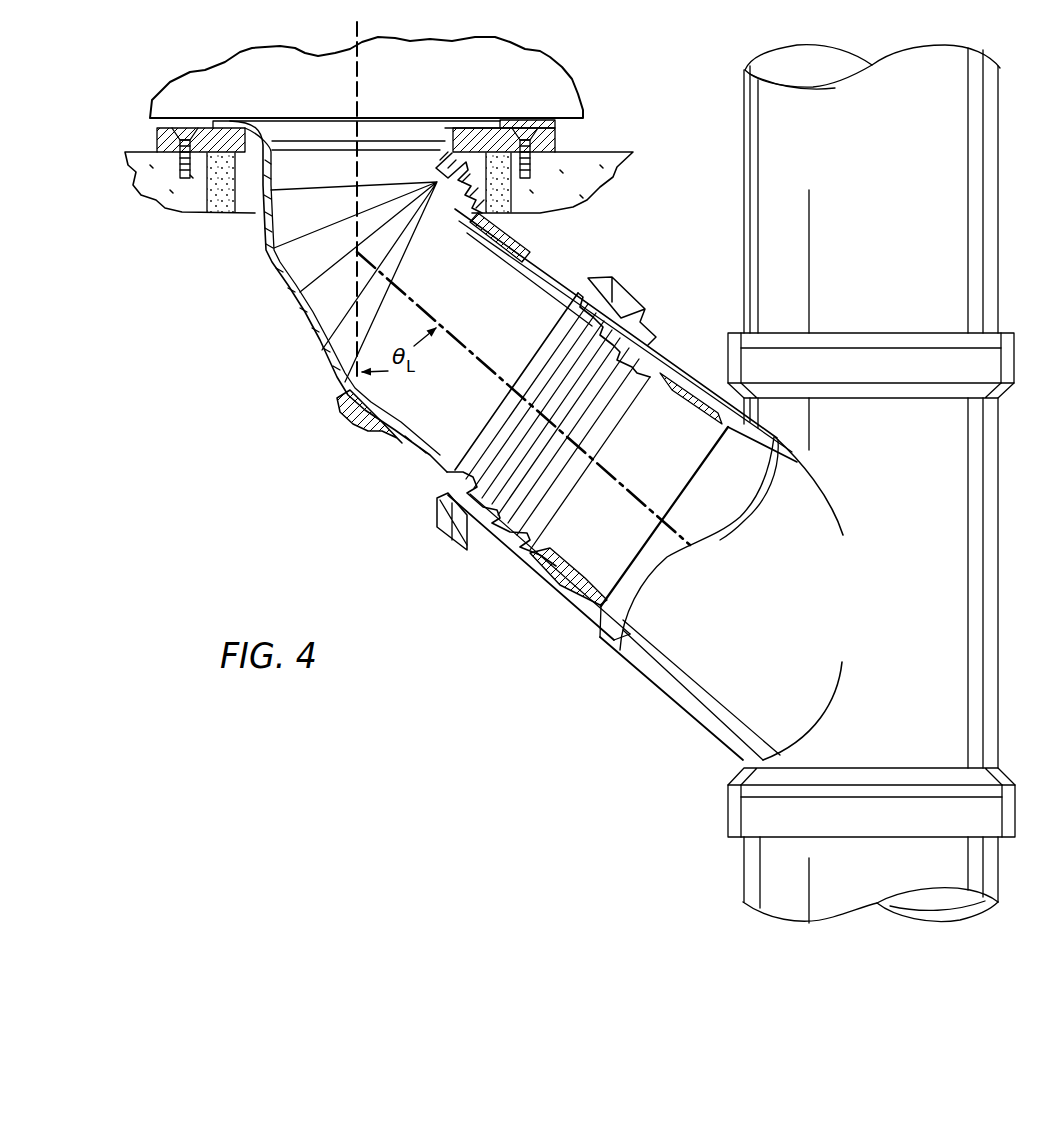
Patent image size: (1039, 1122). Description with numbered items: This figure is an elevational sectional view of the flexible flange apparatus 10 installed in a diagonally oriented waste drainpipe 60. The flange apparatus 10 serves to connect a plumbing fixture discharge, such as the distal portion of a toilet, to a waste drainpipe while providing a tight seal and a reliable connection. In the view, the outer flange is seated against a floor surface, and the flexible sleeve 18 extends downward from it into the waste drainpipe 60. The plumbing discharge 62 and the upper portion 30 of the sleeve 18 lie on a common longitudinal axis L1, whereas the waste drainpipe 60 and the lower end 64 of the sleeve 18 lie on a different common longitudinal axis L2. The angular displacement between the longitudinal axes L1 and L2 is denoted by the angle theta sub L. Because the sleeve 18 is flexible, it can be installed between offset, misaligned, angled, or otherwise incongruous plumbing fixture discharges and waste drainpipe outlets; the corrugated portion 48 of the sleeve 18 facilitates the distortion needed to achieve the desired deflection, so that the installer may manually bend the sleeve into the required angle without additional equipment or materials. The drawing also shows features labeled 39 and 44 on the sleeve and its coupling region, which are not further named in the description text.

The flange apparatus 10 is at (210, 284).
The sleeve 18 is at (308, 336).
The upper portion of the sleeve 30 is at (488, 118).
The body rib 39 is at (368, 438).
The seal 44 is at (526, 570).
The corrugated portion 48 is at (280, 290).
The waste drainpipe 60 is at (590, 632).
The plumbing discharge 62 is at (566, 72).
The lower end of the sleeve 64 is at (692, 486).
The longitudinal axis L1 is at (362, 86).
The longitudinal axis L2 is at (644, 508).